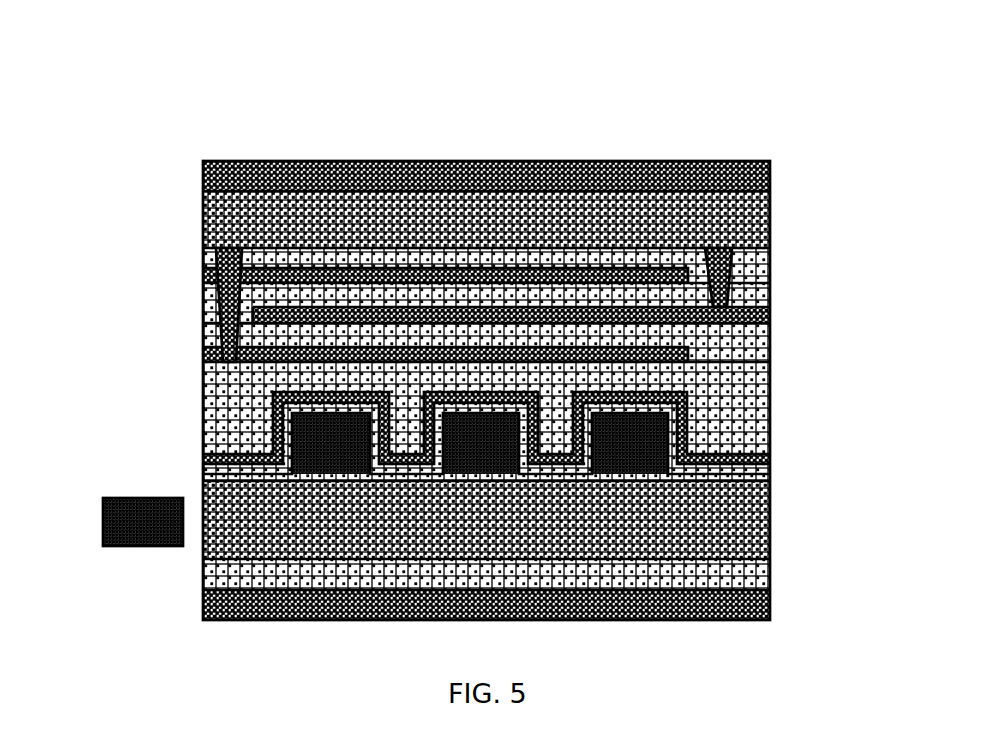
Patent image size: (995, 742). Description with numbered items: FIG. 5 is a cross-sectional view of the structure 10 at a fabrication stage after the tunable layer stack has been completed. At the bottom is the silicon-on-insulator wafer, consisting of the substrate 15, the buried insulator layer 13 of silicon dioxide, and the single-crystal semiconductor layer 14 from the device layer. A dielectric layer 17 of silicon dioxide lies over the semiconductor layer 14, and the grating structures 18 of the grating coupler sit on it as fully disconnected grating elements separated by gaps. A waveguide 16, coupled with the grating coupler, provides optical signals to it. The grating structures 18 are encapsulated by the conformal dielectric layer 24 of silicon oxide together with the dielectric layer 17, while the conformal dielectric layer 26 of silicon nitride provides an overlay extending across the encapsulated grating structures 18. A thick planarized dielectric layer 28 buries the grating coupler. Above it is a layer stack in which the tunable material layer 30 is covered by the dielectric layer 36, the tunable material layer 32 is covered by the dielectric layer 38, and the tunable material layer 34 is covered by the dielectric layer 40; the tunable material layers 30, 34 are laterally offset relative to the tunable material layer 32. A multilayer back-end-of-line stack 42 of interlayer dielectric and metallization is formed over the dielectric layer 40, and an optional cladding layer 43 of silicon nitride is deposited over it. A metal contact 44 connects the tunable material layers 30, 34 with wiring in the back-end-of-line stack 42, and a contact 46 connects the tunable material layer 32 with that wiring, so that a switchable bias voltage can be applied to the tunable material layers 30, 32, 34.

The structure 10 is at (133, 85).
The buried insulator layer 13 is at (753, 582).
The semiconductor layer 14 is at (745, 536).
The substrate 15 is at (753, 606).
The waveguide 16 is at (122, 517).
The dielectric layer 17 is at (753, 478).
The grating structures 18 is at (342, 437).
The conformal dielectric layer 24 is at (668, 437).
The conformal dielectric layer 26 is at (280, 422).
The dielectric layer 28 is at (735, 387).
The tunable material layer 30 is at (205, 355).
The tunable material layer 32 is at (740, 321).
The tunable material layer 34 is at (210, 278).
The dielectric layer 36 is at (747, 350).
The dielectric layer 38 is at (212, 312).
The dielectric layer 40 is at (743, 275).
The back-end-of-line stack 42 is at (753, 223).
The cladding layer 43 is at (748, 173).
The contact 44 is at (230, 270).
The contact 46 is at (720, 260).